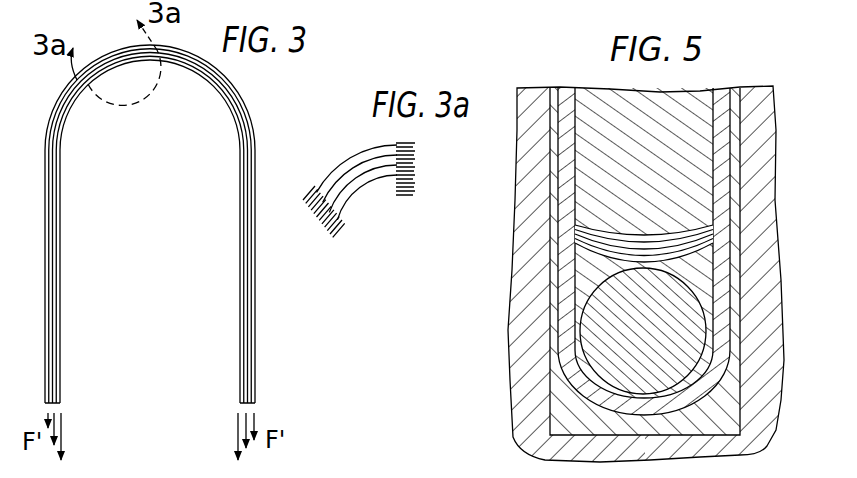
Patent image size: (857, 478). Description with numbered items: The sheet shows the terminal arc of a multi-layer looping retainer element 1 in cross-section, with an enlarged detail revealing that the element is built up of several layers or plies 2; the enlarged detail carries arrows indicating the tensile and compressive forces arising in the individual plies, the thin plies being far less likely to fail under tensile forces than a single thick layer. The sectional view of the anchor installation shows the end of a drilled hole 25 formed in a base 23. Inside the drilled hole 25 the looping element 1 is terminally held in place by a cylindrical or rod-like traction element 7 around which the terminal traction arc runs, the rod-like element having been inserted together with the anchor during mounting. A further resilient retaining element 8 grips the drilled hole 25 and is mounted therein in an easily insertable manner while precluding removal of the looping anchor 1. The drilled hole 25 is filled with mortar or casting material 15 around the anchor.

In FIG. 3, the retainer element 1 is at (173, 224).
In FIG. 5, the retainer element 1 is at (720, 127).
In FIG. 3, the layers or plies 2 is at (233, 84).
In FIG. 5, the rod-like retainer element 7 is at (668, 330).
In FIG. 5, the resilient retaining element 8 is at (672, 242).
In FIG. 5, the casting material 15 is at (651, 165).
In FIG. 5, the base 23 is at (518, 333).
In FIG. 5, the drilled hole 25 is at (724, 395).